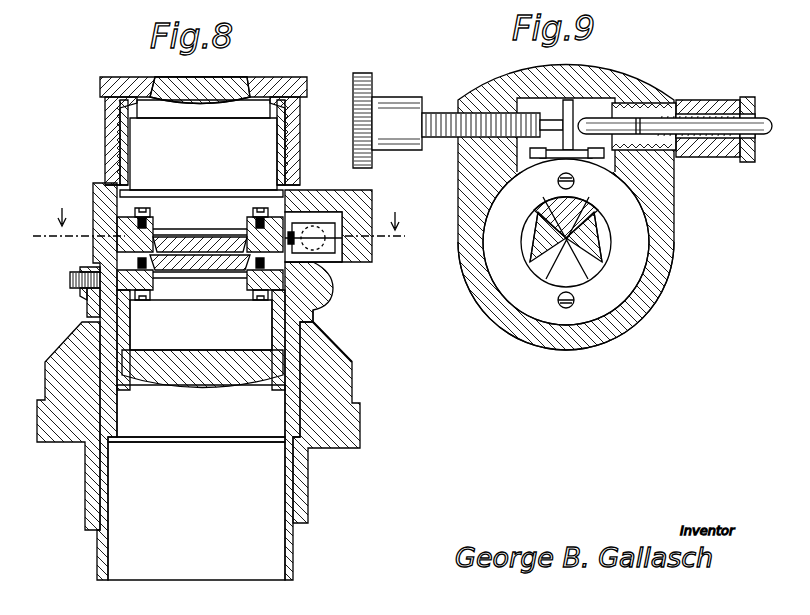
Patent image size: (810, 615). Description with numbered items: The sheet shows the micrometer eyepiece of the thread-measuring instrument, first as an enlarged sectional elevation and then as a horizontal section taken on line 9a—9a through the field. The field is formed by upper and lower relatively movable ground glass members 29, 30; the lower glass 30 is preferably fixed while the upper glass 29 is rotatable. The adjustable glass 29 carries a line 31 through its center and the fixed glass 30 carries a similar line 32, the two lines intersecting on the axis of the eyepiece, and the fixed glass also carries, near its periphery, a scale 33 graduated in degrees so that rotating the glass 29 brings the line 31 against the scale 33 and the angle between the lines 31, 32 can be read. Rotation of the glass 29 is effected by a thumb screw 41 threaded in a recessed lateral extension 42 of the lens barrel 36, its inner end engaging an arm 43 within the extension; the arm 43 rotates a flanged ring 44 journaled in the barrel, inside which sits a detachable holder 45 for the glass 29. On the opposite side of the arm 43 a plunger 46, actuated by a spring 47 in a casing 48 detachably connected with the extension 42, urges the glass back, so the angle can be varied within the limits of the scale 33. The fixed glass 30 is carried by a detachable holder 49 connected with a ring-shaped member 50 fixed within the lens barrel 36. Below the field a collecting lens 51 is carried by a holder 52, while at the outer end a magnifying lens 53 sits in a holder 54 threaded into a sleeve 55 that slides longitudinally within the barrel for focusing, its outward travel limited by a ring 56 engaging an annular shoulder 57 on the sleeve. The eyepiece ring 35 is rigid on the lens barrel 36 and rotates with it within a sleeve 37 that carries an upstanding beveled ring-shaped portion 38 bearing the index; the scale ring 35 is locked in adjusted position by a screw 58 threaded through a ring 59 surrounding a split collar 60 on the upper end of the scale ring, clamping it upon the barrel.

In FIG. 8, the upper ground glass member 29 is at (205, 242).
In FIG. 9, the upper ground glass member 29 is at (531, 256).
In FIG. 8, the lower ground glass member 30 is at (196, 272).
In FIG. 9, the line 31 is at (608, 236).
In FIG. 9, the line 32 is at (535, 220).
In FIG. 9, the scale 33 is at (586, 210).
In FIG. 8, the eyepiece ring 35 is at (320, 342).
In FIG. 8, the lens tube or barrel 36 is at (105, 128).
In FIG. 9, the lens tube or barrel 36 is at (523, 340).
In FIG. 8, the sleeve 37 is at (352, 394).
In FIG. 8, the beveled ring-shaped portion 38 is at (352, 364).
In FIG. 9, the thumb screw 41 is at (412, 106).
In FIG. 8, the recessed lateral extension 42 is at (372, 205).
In FIG. 9, the recessed lateral extension 42 is at (614, 86).
In FIG. 8, the arm 43 is at (306, 236).
In FIG. 9, the arm 43 is at (568, 112).
In FIG. 8, the flanged ring 44 is at (117, 243).
In FIG. 9, the flanged ring 44 is at (640, 215).
In FIG. 8, the detachable holder 45 is at (318, 264).
In FIG. 9, the plunger 46 is at (630, 110).
In FIG. 9, the spring 47 is at (700, 116).
In FIG. 9, the casing 48 is at (706, 158).
In FIG. 8, the detachable holder 49 is at (252, 290).
In FIG. 8, the ring-shaped member 50 is at (122, 346).
In FIG. 8, the collecting lens 51 is at (222, 355).
In FIG. 8, the holder 52 is at (126, 412).
In FIG. 8, the magnifying lens 53 is at (260, 66).
In FIG. 8, the holder 54 is at (100, 80).
In FIG. 8, the sleeve 55 is at (128, 168).
In FIG. 8, the ring 56 is at (117, 152).
In FIG. 8, the annular shoulder 57 is at (100, 184).
In FIG. 8, the screw 58 is at (70, 280).
In FIG. 8, the ring 59 is at (87, 310).
In FIG. 8, the split collar 60 is at (84, 296).
In FIG. 8, the section line 9a is at (227, 227).